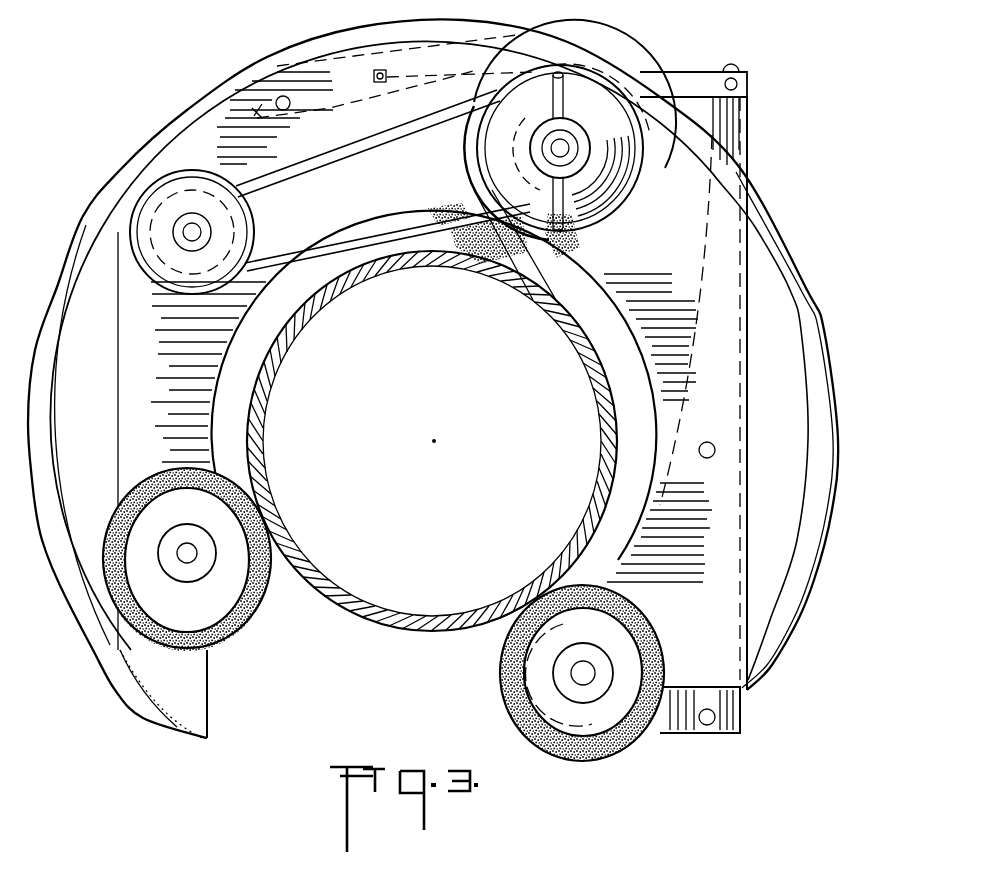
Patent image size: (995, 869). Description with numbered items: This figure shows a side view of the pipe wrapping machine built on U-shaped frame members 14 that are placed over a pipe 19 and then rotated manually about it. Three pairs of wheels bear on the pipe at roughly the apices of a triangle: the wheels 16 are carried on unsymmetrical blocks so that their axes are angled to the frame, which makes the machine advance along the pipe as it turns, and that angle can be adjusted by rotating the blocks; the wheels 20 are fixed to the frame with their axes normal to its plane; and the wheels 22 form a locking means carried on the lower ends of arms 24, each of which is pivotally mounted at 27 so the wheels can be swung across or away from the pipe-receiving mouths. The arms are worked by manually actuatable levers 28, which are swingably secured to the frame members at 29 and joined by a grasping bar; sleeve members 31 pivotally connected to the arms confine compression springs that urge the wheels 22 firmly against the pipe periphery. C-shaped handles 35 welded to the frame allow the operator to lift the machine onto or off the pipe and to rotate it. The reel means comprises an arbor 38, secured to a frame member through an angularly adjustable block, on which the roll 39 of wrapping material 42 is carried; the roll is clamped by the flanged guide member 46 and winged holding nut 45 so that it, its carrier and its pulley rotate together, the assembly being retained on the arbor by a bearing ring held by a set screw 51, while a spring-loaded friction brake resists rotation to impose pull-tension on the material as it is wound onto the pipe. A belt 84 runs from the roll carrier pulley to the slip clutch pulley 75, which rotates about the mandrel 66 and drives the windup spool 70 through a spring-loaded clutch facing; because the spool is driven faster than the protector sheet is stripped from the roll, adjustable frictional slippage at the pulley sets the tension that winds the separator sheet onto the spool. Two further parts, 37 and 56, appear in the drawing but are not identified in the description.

The frame members 14 is at (207, 697).
The wheels 16 is at (253, 617).
The pipe 19 is at (398, 630).
The wheels 20 is at (560, 242).
The wheels 22 is at (613, 755).
The arms 24 is at (753, 520).
The pivot 27 is at (715, 449).
The levers 28 is at (333, 90).
The lever pivot 29 is at (278, 98).
The sleeve members 31 is at (697, 70).
The C-shaped handles 35 is at (817, 573).
The mounting hole 37 is at (710, 725).
The arbor 38 is at (575, 152).
The roll 39 is at (618, 202).
The wrapping material 42 is at (468, 268).
The winged holding nut 45 is at (590, 146).
The flanged guide member 46 is at (607, 55).
The set screw 51 is at (562, 138).
The tube bore 56 is at (360, 272).
The mandrel 66 is at (190, 240).
The windup spool 70 is at (182, 352).
The pulley 75 is at (258, 203).
The belt 84 is at (342, 152).